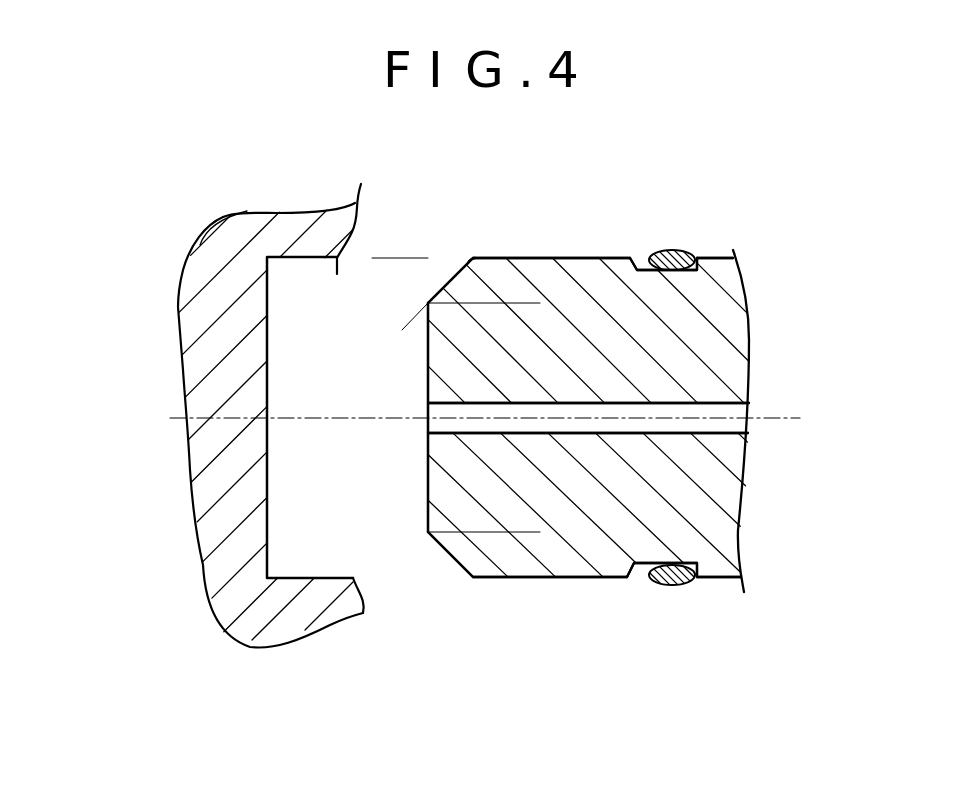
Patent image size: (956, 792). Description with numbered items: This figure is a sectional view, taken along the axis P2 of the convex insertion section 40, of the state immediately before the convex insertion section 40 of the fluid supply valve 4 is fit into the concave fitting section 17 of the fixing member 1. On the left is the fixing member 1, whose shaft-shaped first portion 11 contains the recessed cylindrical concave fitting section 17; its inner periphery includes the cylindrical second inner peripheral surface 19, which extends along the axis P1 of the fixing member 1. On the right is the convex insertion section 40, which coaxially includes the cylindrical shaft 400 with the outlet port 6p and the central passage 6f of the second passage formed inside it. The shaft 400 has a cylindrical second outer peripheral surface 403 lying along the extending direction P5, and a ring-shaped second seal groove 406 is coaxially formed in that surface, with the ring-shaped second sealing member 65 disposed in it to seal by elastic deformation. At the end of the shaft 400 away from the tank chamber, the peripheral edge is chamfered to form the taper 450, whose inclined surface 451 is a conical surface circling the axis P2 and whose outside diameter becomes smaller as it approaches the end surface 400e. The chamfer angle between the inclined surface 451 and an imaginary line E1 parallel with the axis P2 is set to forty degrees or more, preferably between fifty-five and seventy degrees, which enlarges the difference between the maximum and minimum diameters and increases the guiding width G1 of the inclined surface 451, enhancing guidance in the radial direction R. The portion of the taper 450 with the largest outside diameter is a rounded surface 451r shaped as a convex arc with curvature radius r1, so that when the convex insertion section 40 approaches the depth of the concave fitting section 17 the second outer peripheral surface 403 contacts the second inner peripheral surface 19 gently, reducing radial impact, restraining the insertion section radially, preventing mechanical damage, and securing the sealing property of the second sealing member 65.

The fixing member 1 is at (271, 392).
The first portion 11 is at (245, 228).
The second inner peripheral surface 19 is at (304, 260).
The concave fitting section 17 is at (318, 353).
The convex insertion section 40 is at (650, 421).
The fluid supply valve 4 is at (650, 421).
The shaft 400 is at (735, 548).
The end surface 400e is at (428, 515).
The outlet port 6p is at (447, 408).
The passage 6f is at (718, 408).
The second outer peripheral surface 403 is at (611, 257).
The second seal groove 406 is at (641, 268).
The second sealing member 65 is at (673, 251).
The inclined surface 451 is at (437, 290).
The taper 450 is at (448, 287).
The rounded surface 451r is at (473, 258).
The curvature radius r1 is at (487, 275).
The guiding width G1 is at (525, 301).
The imaginary line E1 is at (405, 257).
The radial direction R is at (157, 394).
The axis P1 is at (233, 418).
The axis P2 is at (765, 421).
The extending direction P5 is at (848, 405).